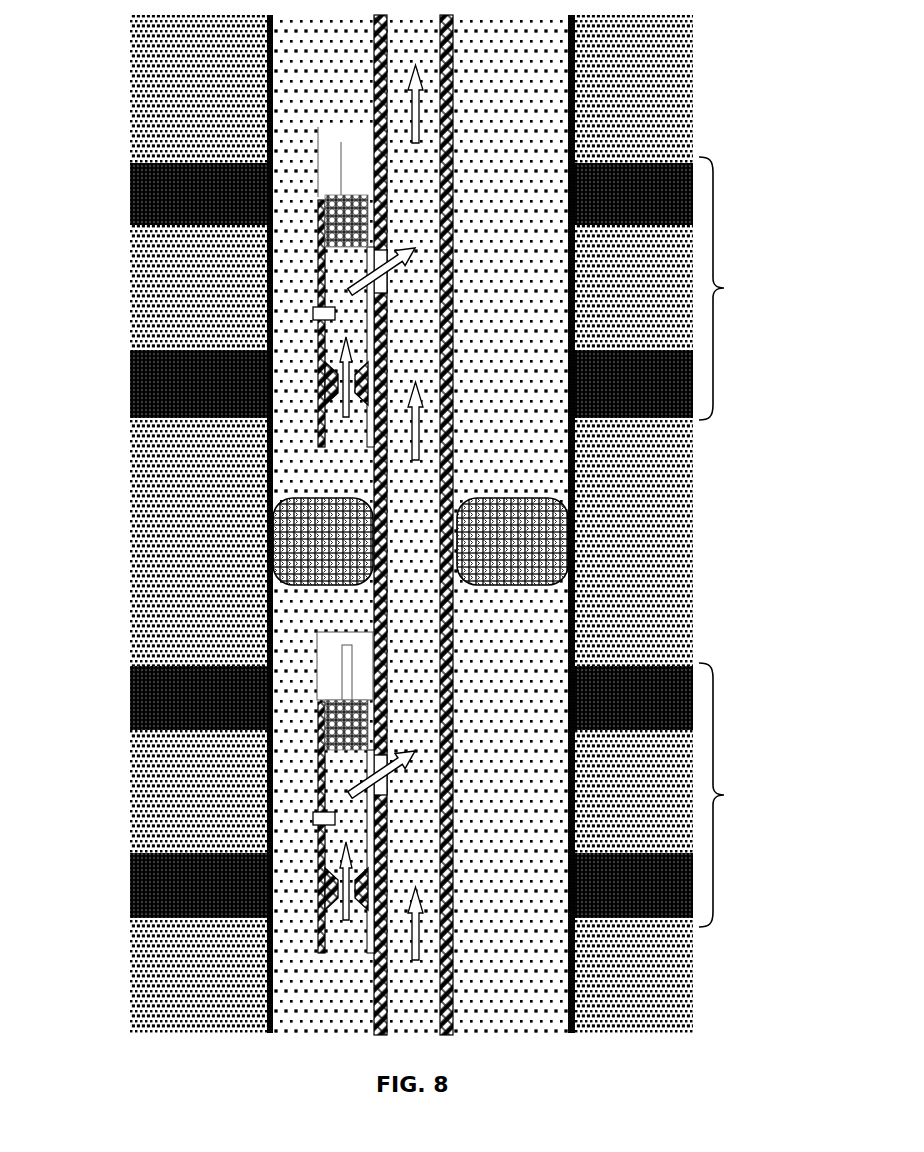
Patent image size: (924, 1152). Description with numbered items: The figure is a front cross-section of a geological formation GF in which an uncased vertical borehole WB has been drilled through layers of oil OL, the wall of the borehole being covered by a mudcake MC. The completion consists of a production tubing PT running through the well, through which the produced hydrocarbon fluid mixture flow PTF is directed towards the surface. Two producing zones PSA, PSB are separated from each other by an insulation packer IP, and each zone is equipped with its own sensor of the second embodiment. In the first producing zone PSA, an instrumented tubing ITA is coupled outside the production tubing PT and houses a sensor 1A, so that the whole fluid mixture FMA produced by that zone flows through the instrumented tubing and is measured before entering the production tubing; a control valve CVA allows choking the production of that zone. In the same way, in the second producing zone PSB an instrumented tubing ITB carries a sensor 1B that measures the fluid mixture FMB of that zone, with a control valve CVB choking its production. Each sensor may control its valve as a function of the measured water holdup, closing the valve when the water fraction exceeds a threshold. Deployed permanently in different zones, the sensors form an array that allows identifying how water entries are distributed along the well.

The control valve CVB is at (333, 178).
The layer of oil OL is at (135, 192).
The instrumented tubing ITB is at (320, 236).
The sensor 1B is at (303, 314).
The fluid mixture FMB is at (347, 414).
The control valve CVA is at (333, 683).
The instrumented tubing ITA is at (320, 740).
The sensor 1A is at (303, 818).
The fluid mixture FMA is at (347, 920).
The geological formation GF is at (201, 1021).
The mudcake MC is at (270, 1034).
The borehole WB is at (537, 1022).
The production tubing PT is at (453, 113).
The produced fluid mixture flow PTF is at (453, 432).
The insulation packer IP is at (540, 532).
The producing zone PSB is at (735, 288).
The producing zone PSA is at (736, 795).